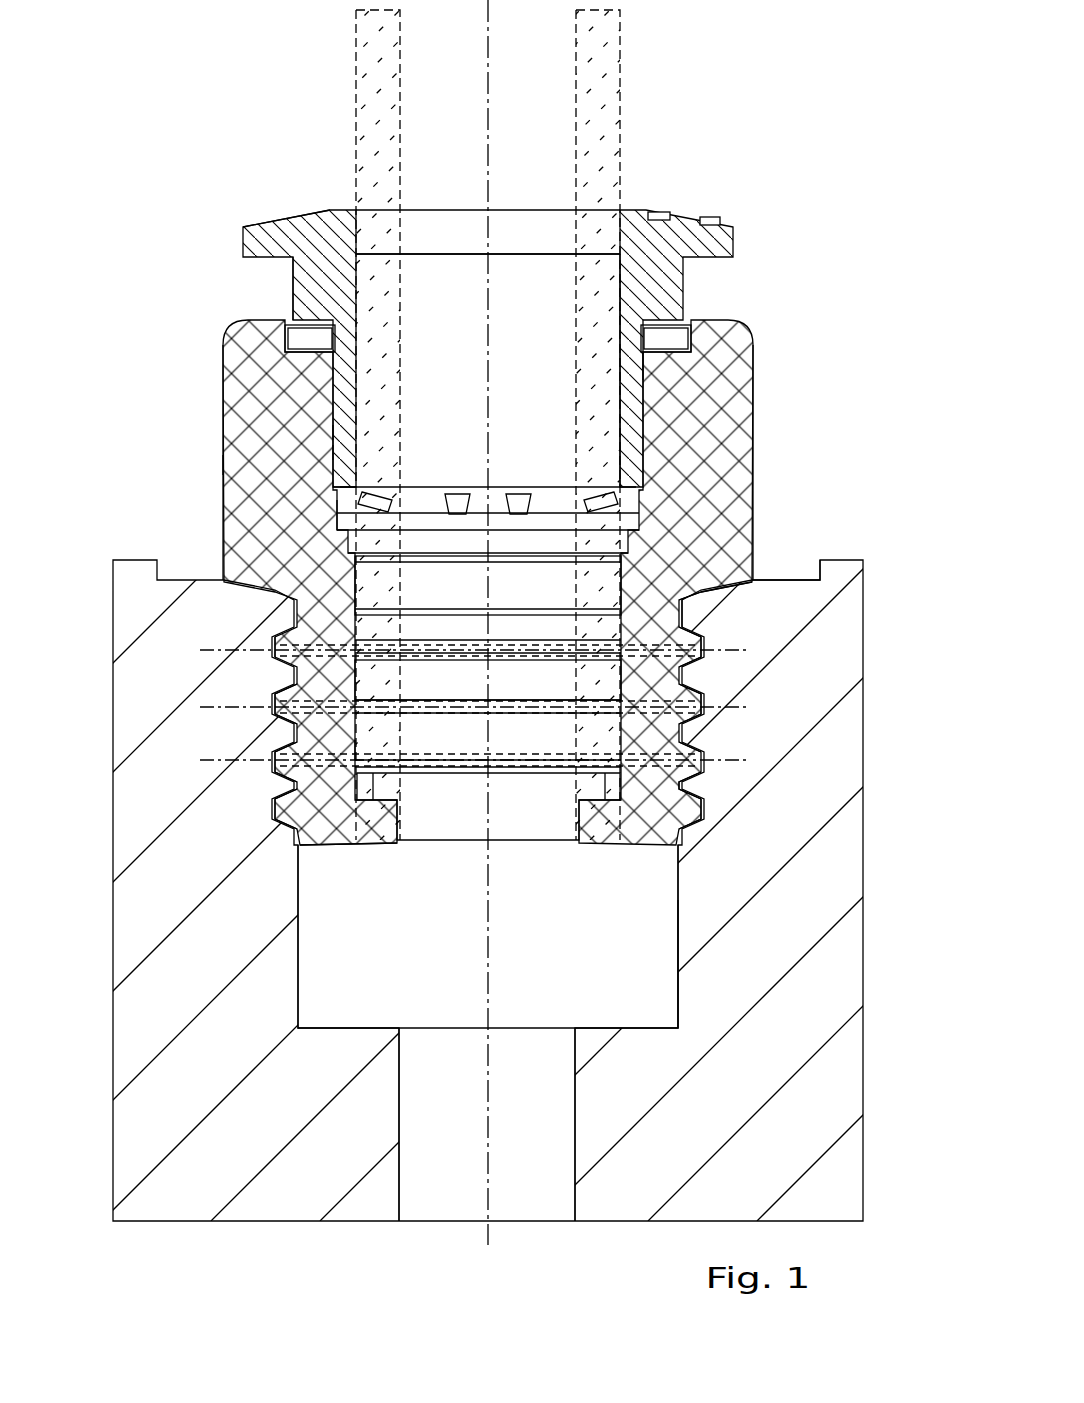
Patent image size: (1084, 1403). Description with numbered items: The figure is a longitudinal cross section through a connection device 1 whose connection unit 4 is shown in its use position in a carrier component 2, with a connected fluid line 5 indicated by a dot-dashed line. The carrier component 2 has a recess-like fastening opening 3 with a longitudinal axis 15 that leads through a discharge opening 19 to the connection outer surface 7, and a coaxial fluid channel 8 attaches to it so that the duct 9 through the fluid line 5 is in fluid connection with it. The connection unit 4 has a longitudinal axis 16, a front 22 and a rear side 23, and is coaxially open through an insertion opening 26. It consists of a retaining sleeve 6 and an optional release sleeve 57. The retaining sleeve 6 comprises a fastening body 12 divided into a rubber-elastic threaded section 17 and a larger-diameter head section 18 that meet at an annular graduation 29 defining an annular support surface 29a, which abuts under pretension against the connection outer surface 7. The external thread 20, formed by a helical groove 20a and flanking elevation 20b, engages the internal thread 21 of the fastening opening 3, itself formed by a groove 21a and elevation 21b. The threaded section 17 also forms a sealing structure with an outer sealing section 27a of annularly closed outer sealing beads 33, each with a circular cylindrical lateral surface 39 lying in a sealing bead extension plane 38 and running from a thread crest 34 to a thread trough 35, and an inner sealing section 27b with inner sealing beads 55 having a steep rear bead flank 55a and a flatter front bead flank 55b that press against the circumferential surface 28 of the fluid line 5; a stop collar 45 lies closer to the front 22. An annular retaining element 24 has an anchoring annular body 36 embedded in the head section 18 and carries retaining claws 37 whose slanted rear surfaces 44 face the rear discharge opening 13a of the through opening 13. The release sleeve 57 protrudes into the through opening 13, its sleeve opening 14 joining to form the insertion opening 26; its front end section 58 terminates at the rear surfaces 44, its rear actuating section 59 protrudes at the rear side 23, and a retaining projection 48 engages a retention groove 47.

The connection device 1 is at (802, 155).
The carrier component 2 is at (233, 1217).
The fastening opening 3 is at (644, 1000).
The connection unit 4 is at (236, 463).
The fluid line 5 is at (598, 130).
The retaining sleeve 6 is at (737, 455).
The connection outer surface 7 is at (790, 577).
The fluid channel 8 is at (542, 1192).
The duct 9 is at (555, 67).
The fastening body 12 is at (236, 393).
The through opening 13 is at (562, 685).
The rear discharge opening 13a is at (295, 328).
The sleeve opening 14 is at (550, 283).
The longitudinal axis of the fastening opening 15 is at (492, 960).
The longitudinal axis of the connection unit 16 is at (600, 305).
The threaded section 17 is at (692, 735).
The head section 18 is at (730, 400).
The discharge opening 19 is at (680, 583).
The external thread 20 is at (707, 800).
The helical groove 20a is at (365, 592).
The elevation 20b is at (367, 680).
The internal thread 21 is at (702, 808).
The groove of the internal thread 21a is at (282, 720).
The elevation of the internal thread 21b is at (290, 768).
The front 22 is at (330, 855).
The rear side 23 is at (310, 197).
The retaining element 24 is at (500, 488).
The insertion opening 26 is at (420, 538).
The outer sealing section 27a is at (707, 755).
The inner sealing section 27b is at (380, 750).
The circumferential surface 28 is at (640, 368).
The annular graduation 29 is at (722, 598).
The annular support surface 29a is at (712, 588).
The outer sealing bead 33 is at (555, 760).
The thread crest 34 is at (272, 658).
The thread trough 35 is at (296, 810).
The anchoring annular body 36 is at (337, 512).
The retaining claws 37 is at (535, 520).
The sealing bead extension plane 38 is at (200, 650).
The circular cylindrical lateral surface 39 is at (285, 645).
The slanted rear surface 44 is at (395, 488).
The stop collar 45 is at (600, 846).
The retention groove 47 is at (332, 450).
The retaining projection 48 is at (330, 432).
The inner sealing bead 55 is at (365, 647).
The rear bead flank 55a is at (360, 705).
The front bead flank 55b is at (374, 748).
The release sleeve 57 is at (298, 272).
The front end section 58 is at (345, 492).
The rear actuating section 59 is at (258, 240).